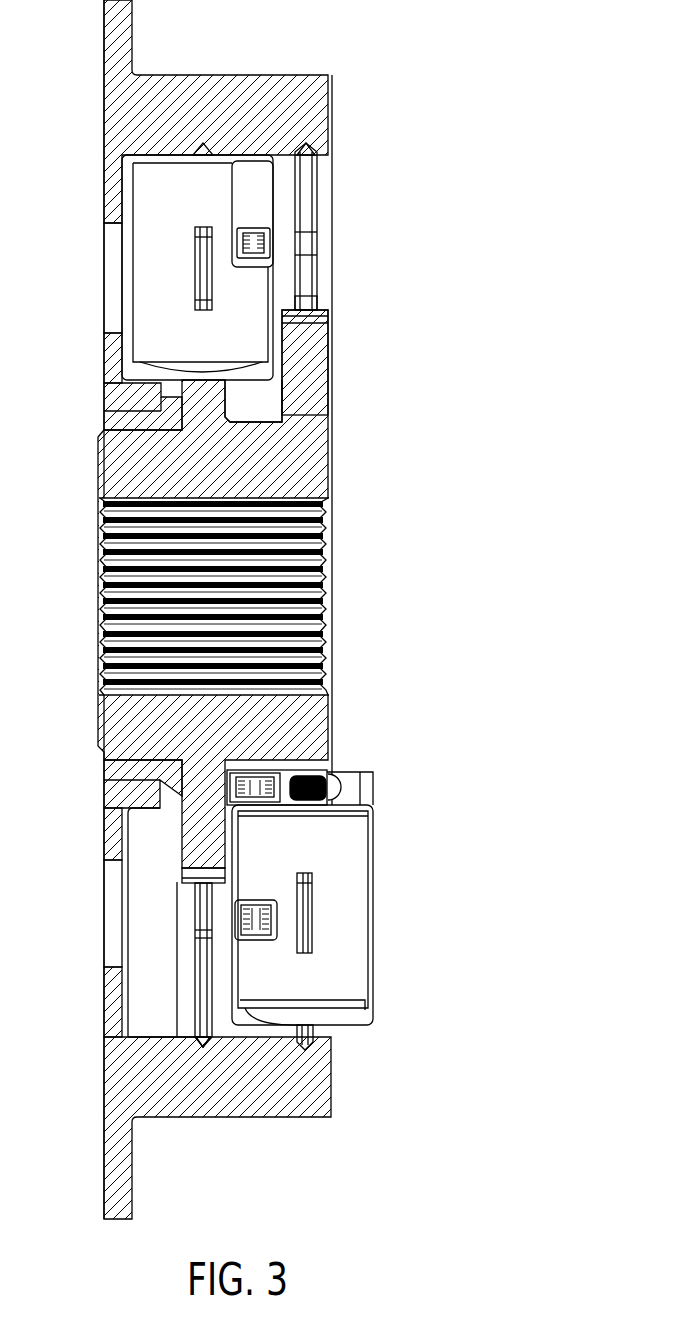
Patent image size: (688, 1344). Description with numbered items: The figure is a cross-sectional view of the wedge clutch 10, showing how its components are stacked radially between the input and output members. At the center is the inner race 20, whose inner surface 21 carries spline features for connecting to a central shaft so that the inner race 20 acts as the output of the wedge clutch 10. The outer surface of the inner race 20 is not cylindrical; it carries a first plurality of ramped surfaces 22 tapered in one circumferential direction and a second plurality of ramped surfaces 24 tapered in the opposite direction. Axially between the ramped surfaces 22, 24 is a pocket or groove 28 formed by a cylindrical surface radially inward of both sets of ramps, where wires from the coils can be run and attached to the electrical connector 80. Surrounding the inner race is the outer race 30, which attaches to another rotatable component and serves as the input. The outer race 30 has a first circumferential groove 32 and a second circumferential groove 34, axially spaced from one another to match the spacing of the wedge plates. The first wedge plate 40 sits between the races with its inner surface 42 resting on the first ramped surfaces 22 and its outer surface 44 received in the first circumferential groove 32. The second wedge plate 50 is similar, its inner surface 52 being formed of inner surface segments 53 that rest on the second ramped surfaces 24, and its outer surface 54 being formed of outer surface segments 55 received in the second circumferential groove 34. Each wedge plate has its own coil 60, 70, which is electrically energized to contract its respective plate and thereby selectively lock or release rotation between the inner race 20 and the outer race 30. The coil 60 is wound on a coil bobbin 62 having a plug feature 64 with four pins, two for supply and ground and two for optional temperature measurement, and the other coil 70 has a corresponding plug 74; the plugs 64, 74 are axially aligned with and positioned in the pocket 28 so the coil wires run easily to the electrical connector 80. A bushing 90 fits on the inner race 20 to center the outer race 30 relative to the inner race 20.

The wedge clutch 10 is at (436, 100).
The inner race 20 is at (305, 455).
The inner surface 21 is at (305, 592).
The first plurality of ramped surfaces 22 is at (322, 320).
The second plurality of ramped surfaces 24 is at (185, 880).
The pocket or groove 28 is at (284, 414).
The outer race 30 is at (250, 93).
The first circumferential groove 32 is at (310, 1042).
The second circumferential groove 34 is at (203, 1045).
The first wedge plate 40 is at (322, 218).
The inner surface 42 is at (322, 300).
The outer surface 44 is at (322, 151).
The second wedge plate 50 is at (197, 997).
The inner surface 52 is at (129, 965).
The inner surface segments 53 is at (195, 895).
The outer surface 54 is at (128, 1067).
The outer surface segments 55 is at (197, 1040).
The coil 60 is at (358, 870).
The coil bobbin 62 is at (258, 993).
The plug feature 64 is at (258, 925).
The coil 70 is at (140, 278).
The plug 74 is at (247, 248).
The electrical connector 80 is at (340, 790).
The bushing 90 is at (110, 423).